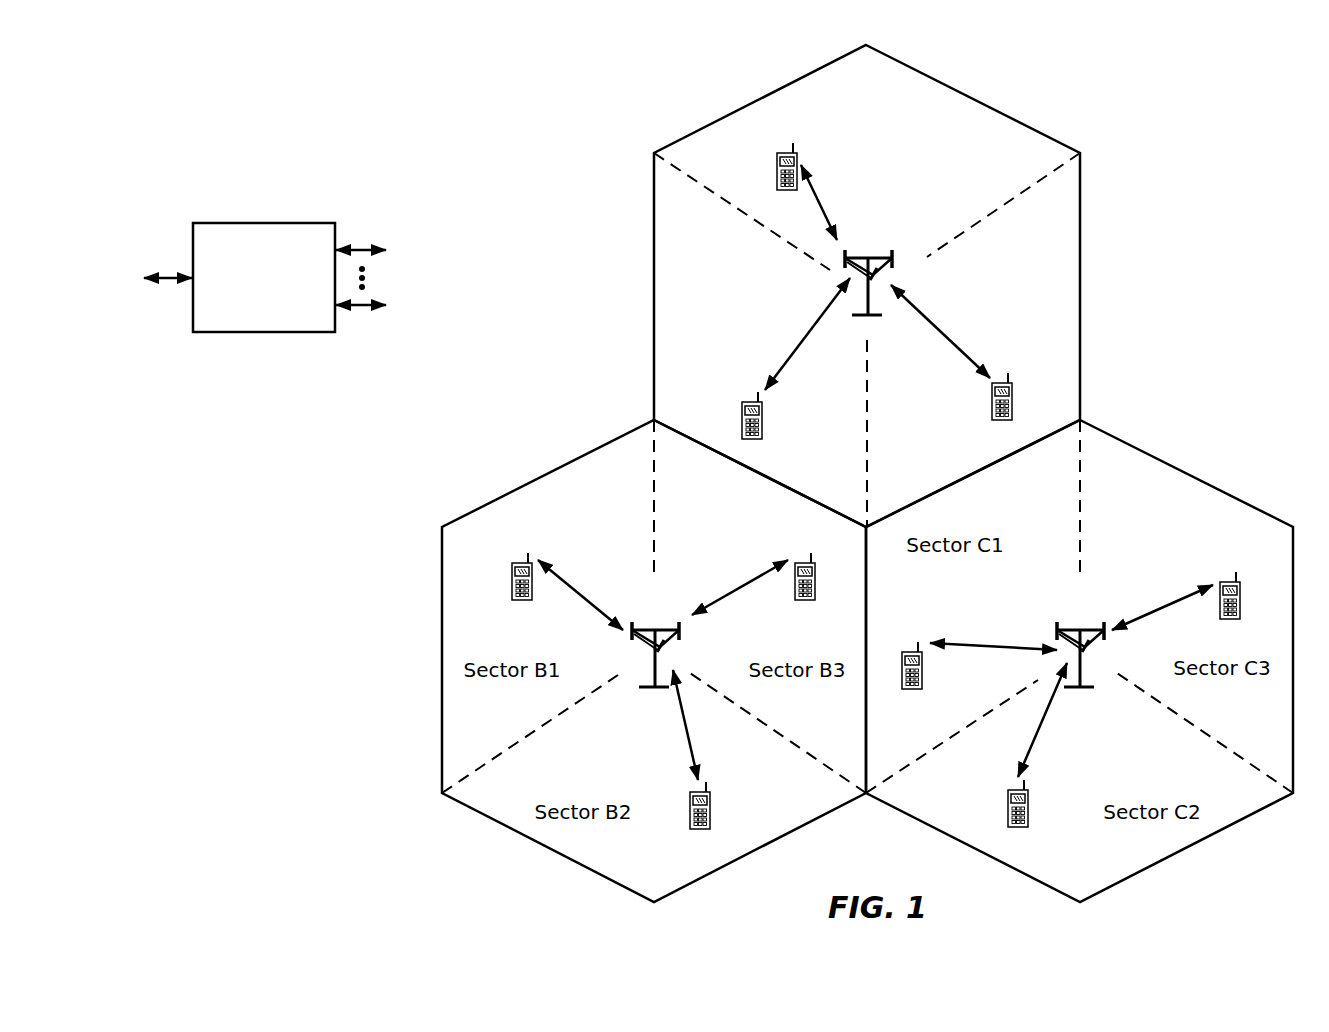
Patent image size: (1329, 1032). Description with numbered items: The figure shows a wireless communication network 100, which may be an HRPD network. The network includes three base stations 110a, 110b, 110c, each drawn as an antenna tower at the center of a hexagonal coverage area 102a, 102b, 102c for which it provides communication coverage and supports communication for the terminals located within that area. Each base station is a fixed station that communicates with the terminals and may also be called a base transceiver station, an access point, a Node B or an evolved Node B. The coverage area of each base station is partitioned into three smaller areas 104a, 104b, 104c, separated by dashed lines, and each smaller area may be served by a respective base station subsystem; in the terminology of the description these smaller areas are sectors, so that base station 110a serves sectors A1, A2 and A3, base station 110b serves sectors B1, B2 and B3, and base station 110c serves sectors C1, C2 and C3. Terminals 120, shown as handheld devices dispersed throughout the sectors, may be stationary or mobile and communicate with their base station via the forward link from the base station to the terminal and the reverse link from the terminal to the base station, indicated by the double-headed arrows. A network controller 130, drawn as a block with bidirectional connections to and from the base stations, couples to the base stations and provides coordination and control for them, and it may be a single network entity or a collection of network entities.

The wireless communication network 100 is at (1232, 110).
The geographic coverage area 102a is at (983, 87).
The geographic coverage area 102b is at (547, 472).
The geographic coverage area 102c is at (1200, 460).
The smaller area 104a is at (847, 89).
The smaller area 104b is at (670, 256).
The smaller area 104c is at (1024, 256).
The base station 110a is at (860, 253).
The base station 110b is at (660, 613).
The base station 110c is at (1080, 626).
The terminal 120 is at (775, 162).
The network controller 130 is at (257, 223).